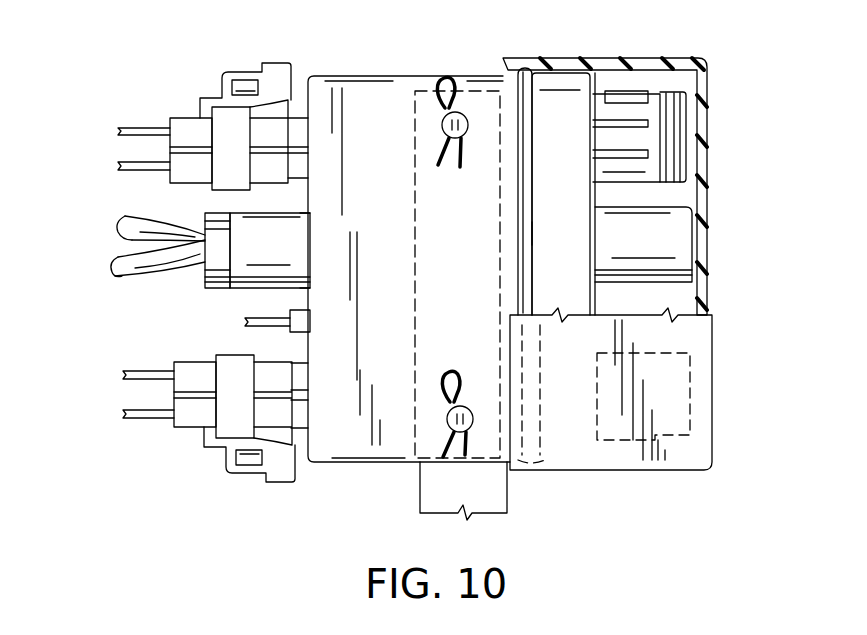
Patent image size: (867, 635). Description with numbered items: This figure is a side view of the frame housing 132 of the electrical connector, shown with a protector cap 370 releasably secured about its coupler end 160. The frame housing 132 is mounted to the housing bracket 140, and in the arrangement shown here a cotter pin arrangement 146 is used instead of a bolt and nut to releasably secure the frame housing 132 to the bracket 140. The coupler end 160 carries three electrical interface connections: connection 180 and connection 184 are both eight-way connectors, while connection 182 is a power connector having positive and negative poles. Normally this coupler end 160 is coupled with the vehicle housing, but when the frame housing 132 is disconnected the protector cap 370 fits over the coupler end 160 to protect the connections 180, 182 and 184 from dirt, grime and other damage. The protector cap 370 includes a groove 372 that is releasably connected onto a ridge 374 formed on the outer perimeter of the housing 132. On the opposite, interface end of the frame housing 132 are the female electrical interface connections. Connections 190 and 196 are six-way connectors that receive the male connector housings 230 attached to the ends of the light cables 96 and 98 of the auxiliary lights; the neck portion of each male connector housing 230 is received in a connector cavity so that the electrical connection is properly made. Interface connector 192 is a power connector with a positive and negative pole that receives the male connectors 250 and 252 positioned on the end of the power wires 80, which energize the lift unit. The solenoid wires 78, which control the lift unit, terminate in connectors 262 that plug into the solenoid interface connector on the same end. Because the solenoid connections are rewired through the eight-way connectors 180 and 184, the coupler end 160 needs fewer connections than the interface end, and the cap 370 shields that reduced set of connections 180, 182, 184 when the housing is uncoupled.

The frame housing 132 is at (355, 76).
The cotter pin arrangement 146 is at (443, 80).
The coupler end 160 is at (592, 82).
The protector cap 370 is at (707, 96).
The groove 372 is at (528, 78).
The ridge 374 is at (530, 232).
The electrical interface connection 180 is at (690, 153).
The electrical interface connection 182 is at (688, 232).
The electrical interface connection 184 is at (685, 385).
The housing bracket 140 is at (436, 487).
The electrical interface connection 190 is at (305, 165).
The electrical interface connector 192 is at (312, 236).
The electrical interface connection 196 is at (315, 376).
The connectors 262 is at (310, 320).
The solenoid wires 78 is at (250, 322).
The male connector housing 230 is at (185, 118).
The light cable 96 is at (133, 130).
The light cable 98 is at (135, 420).
The power wires 80 is at (130, 258).
The male connector 250 is at (215, 245).
The male connector 252 is at (217, 286).